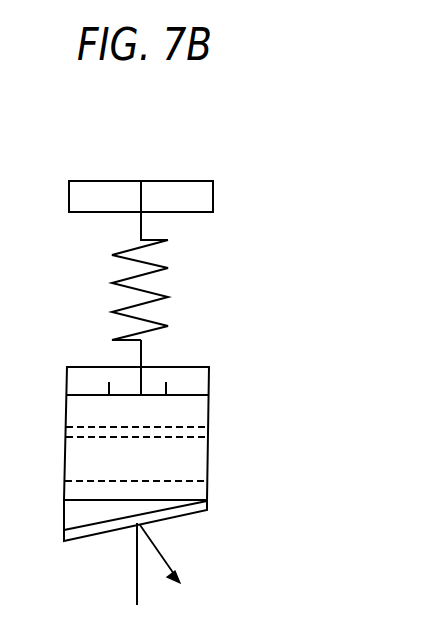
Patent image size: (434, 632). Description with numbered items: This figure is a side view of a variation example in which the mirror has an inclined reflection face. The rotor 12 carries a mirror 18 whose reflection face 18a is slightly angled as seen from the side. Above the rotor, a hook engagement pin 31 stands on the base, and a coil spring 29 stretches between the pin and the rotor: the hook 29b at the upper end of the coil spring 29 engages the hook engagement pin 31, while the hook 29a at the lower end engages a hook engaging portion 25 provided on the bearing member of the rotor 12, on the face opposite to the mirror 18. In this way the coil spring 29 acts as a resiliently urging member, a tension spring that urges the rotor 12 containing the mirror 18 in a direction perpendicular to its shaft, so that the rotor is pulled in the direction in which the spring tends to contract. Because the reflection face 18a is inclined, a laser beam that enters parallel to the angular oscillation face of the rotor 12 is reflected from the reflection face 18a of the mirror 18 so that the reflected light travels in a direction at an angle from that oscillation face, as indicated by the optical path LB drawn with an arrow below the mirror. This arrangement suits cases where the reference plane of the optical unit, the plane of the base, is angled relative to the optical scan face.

The rotor 12 is at (288, 325).
The hook engagement pin 31 is at (193, 182).
The coil spring 29 is at (160, 292).
The hook 29a is at (141, 350).
The hook 29b is at (142, 227).
The hook engaging portion 25 is at (185, 382).
The mirror 18 is at (193, 505).
The reflection face 18a is at (158, 522).
The optical path LB is at (165, 568).